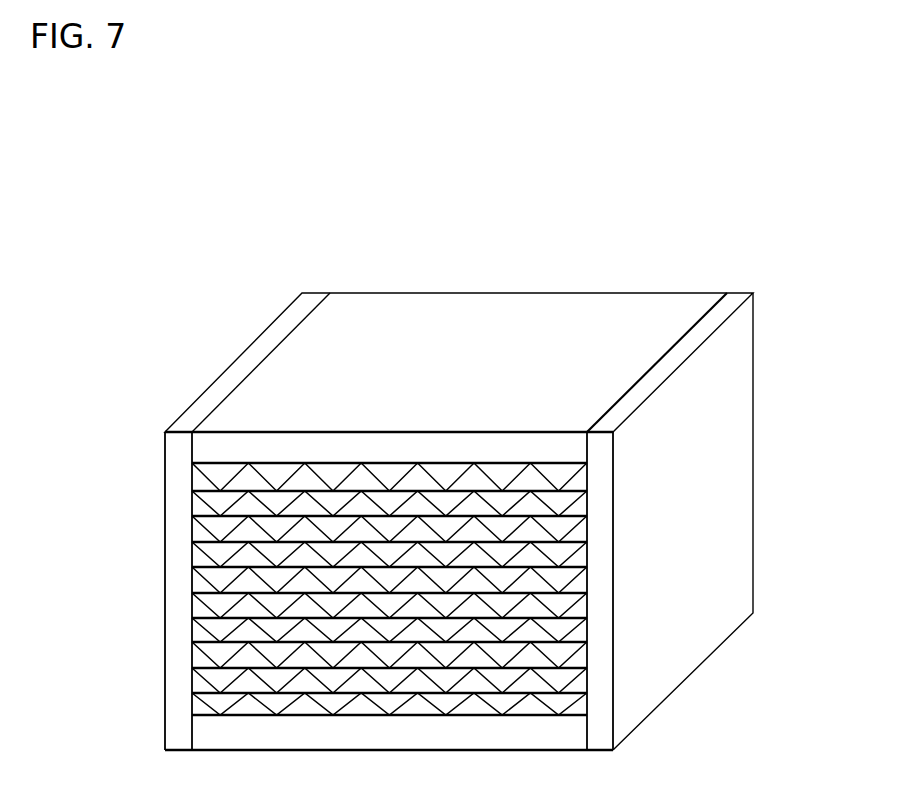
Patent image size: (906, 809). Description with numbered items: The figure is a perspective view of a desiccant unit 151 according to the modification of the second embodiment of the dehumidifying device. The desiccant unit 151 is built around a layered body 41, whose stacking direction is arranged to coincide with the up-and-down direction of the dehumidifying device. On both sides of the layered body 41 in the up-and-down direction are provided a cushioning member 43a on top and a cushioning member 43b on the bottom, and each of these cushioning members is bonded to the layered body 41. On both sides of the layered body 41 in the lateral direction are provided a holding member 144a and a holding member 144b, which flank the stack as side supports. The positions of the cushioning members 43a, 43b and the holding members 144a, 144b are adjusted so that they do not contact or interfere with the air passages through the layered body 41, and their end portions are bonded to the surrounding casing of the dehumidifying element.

The desiccant unit 151 is at (730, 221).
The layered body 41 is at (205, 550).
The cushioning member 43a is at (200, 445).
The cushioning member 43b is at (200, 733).
The holding member 144a is at (183, 634).
The holding member 144b is at (607, 716).